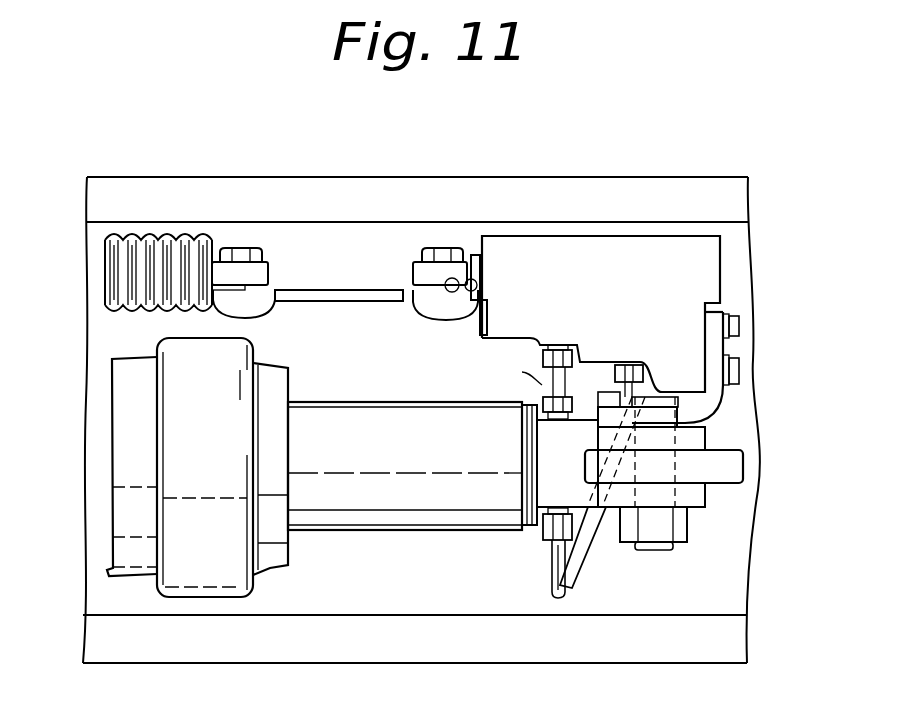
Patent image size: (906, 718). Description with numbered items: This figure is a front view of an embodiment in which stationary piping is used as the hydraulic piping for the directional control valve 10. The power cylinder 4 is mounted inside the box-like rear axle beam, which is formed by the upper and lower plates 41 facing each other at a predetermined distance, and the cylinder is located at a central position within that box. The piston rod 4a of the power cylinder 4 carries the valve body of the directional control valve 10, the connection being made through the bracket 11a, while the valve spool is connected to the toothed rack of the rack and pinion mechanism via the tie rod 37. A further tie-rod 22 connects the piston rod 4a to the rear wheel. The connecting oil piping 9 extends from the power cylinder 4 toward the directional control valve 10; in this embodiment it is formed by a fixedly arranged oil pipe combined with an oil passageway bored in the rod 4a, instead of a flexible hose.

The power cylinder 4 is at (130, 574).
The piston rod 4a is at (390, 530).
The connecting oil piping 9 is at (606, 560).
The directional control valve 10 is at (584, 236).
The bracket 11a is at (712, 405).
The tie-rod 22 is at (730, 484).
The tie rod 37 is at (309, 290).
The upper and lower plates 41 is at (462, 200).